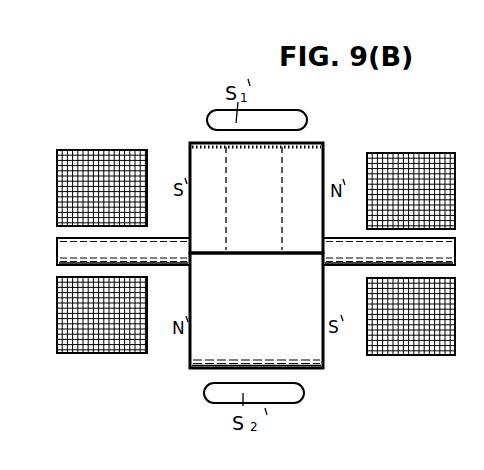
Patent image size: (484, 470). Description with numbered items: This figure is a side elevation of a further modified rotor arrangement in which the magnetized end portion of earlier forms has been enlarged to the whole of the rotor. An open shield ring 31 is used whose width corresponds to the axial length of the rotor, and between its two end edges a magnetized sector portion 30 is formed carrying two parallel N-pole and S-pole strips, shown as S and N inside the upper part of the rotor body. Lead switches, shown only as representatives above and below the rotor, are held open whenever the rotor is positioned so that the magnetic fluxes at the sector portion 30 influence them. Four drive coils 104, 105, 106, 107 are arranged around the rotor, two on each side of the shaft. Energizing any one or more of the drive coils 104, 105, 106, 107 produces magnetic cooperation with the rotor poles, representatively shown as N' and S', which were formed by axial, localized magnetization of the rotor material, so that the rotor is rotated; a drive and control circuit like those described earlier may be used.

The magnetized sector portion 30 is at (263, 172).
The open shield ring 31 is at (318, 292).
The drive coil 104 is at (390, 162).
The drive coil 105 is at (408, 348).
The drive coil 106 is at (93, 160).
The drive coil 107 is at (100, 343).